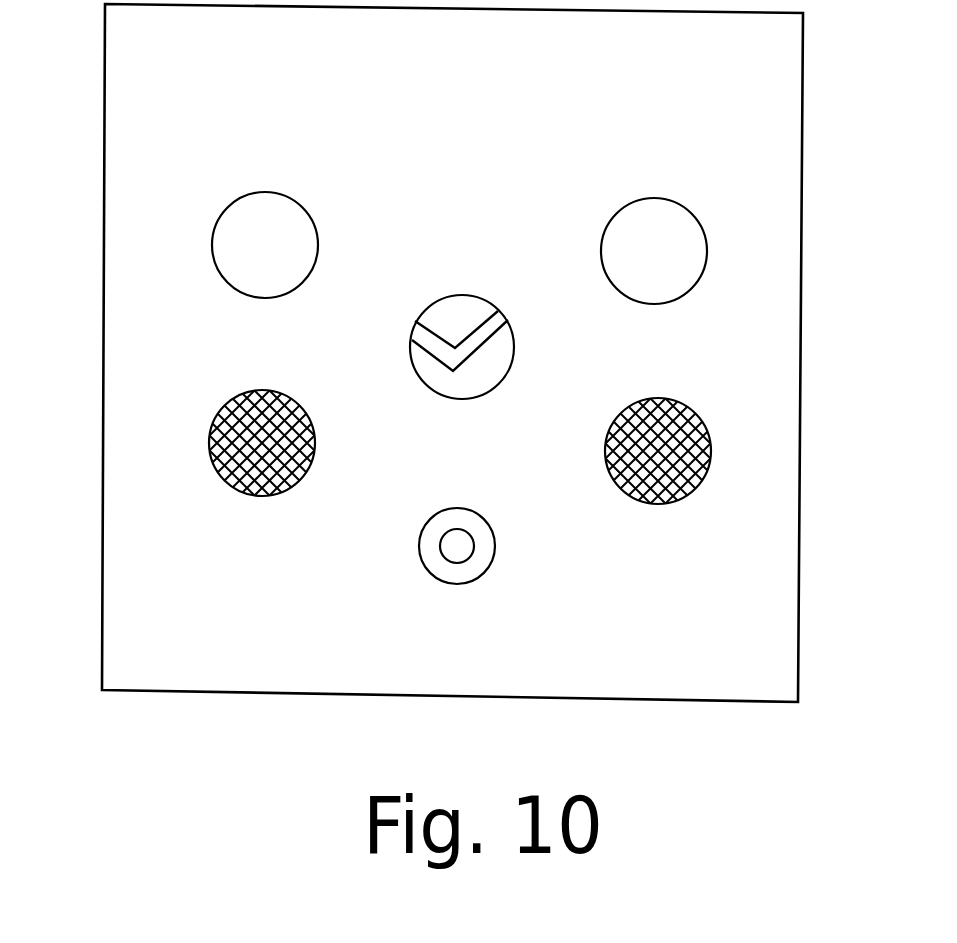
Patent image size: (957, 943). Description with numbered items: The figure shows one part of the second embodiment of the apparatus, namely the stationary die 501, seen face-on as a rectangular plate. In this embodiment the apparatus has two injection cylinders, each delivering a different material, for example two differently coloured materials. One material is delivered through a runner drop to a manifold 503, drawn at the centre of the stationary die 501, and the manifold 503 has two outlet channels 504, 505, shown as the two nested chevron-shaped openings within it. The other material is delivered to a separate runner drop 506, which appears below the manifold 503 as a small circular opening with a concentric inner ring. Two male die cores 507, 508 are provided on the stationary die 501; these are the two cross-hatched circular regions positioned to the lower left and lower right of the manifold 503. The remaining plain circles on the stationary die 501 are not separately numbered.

The stationary die 501 is at (757, 143).
The manifold 503 is at (457, 295).
The outlet channel 504 is at (428, 337).
The outlet channel 505 is at (497, 320).
The runner drop 506 is at (475, 548).
The male die core 507 is at (255, 497).
The male die core 508 is at (662, 505).